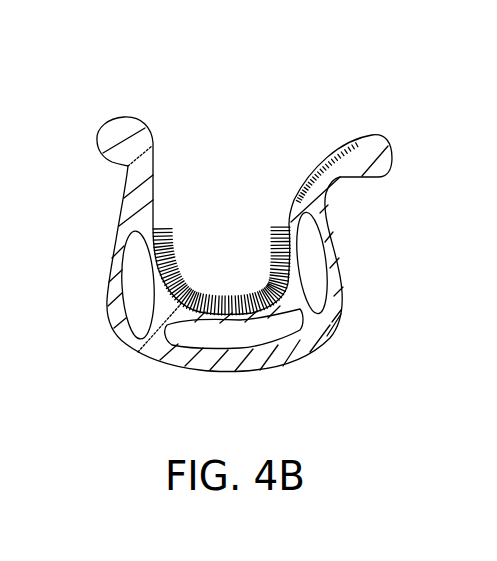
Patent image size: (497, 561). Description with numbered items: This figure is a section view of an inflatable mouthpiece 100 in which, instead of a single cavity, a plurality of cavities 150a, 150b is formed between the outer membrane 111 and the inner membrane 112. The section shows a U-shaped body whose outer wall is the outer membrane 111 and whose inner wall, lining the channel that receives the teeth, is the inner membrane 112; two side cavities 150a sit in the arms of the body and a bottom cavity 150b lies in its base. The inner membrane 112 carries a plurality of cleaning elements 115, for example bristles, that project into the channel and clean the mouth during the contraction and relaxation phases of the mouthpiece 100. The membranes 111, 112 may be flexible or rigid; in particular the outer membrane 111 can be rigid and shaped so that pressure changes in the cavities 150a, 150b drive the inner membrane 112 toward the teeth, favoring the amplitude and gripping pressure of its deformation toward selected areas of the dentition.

The mouthpiece 100 is at (221, 215).
The outer membrane 111 is at (343, 316).
The inner membrane 112 is at (289, 224).
The cleaning elements 115 is at (168, 243).
The cavity 150a is at (317, 275).
The cavity 150b is at (259, 338).